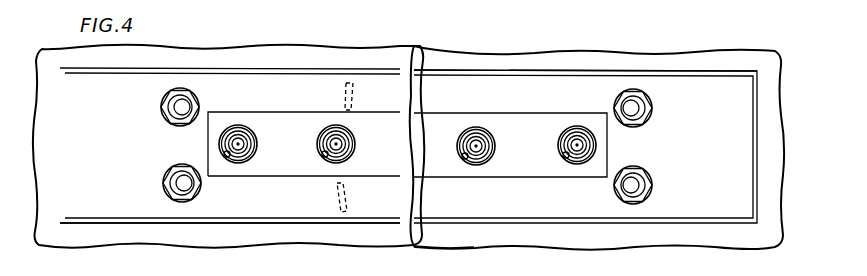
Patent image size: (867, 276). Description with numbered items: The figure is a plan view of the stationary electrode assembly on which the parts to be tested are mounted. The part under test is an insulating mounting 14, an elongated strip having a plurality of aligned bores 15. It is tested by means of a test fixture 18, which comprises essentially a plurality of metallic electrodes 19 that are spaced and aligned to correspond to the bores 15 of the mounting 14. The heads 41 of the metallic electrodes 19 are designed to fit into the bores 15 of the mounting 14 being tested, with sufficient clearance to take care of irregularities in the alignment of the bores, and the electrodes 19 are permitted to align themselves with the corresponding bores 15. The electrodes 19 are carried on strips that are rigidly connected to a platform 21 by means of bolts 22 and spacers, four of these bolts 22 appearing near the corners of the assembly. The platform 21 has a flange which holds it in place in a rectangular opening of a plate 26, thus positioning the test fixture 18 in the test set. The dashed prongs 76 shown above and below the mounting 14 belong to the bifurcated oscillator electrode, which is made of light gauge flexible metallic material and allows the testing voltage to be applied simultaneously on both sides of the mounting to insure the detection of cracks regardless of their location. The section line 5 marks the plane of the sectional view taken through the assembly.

The section line 5 is at (22, 113).
The insulating mounting 14 is at (390, 121).
The bore 15 is at (231, 160).
The test fixture 18 is at (94, 226).
The metallic electrode 19 is at (330, 129).
The platform 21 is at (543, 84).
The bolt 22 is at (180, 108).
The plate 26 is at (514, 242).
The head 41 is at (238, 140).
The prong 76 is at (353, 82).